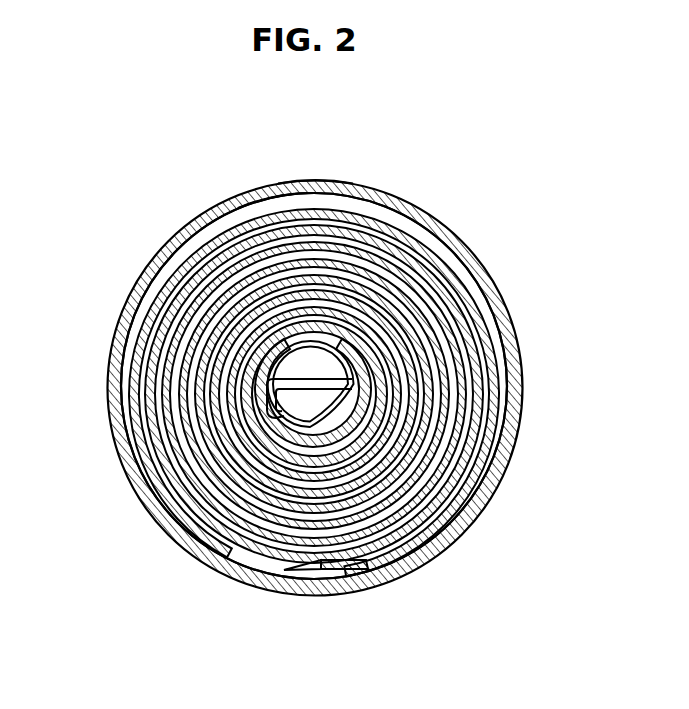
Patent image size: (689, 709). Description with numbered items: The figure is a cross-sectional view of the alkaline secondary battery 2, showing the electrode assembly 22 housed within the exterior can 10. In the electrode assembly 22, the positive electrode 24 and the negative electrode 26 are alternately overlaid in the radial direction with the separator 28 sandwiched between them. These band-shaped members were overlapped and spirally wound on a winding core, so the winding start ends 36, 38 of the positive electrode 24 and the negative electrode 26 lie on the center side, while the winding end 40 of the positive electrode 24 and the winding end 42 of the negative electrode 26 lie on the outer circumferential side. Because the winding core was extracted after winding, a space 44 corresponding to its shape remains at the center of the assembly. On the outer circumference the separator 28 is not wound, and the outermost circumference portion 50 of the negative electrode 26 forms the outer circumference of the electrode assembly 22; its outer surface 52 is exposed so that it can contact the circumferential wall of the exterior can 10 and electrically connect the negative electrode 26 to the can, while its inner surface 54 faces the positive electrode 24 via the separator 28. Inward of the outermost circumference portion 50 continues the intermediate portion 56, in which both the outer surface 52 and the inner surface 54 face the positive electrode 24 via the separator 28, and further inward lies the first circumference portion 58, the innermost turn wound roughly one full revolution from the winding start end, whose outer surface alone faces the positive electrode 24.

The alkaline secondary battery 2 is at (417, 171).
The exterior can 10 is at (480, 276).
The electrode assembly 22 is at (225, 540).
The positive electrode 24 is at (468, 418).
The negative electrode 26 is at (480, 313).
The separator 28 is at (483, 372).
The winding start end of the positive electrode 36 is at (222, 538).
The winding start end of the negative electrode 38 is at (258, 404).
The winding end of the positive electrode 40 is at (338, 557).
The winding end of the negative electrode 42 is at (380, 522).
The space 44 is at (302, 358).
The outermost circumference portion 50 is at (447, 237).
The outer surface 52 is at (300, 178).
The inner surface 54 is at (264, 180).
The intermediate portion 56 is at (205, 282).
The first circumference portion 58 is at (322, 322).